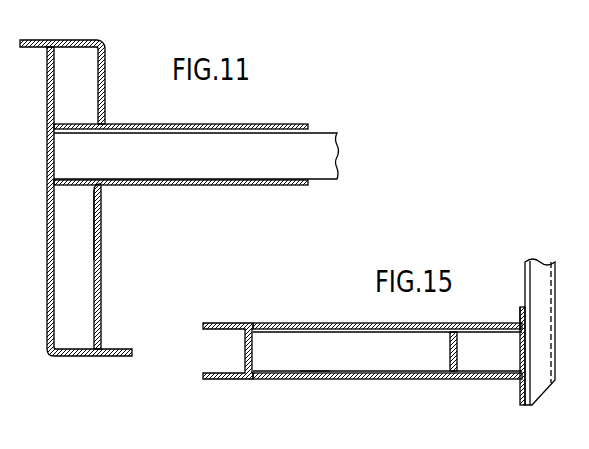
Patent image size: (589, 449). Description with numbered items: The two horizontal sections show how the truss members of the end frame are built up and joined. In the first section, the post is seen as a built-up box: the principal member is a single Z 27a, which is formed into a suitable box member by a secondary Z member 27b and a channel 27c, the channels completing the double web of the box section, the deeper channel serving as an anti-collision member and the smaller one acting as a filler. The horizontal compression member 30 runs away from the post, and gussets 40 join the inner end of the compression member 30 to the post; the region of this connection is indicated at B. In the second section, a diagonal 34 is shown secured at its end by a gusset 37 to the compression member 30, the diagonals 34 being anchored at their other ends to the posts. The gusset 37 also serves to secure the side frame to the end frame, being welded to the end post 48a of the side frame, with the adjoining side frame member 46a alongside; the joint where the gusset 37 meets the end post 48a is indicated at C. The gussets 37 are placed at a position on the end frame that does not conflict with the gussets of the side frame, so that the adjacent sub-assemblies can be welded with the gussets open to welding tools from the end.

In FIG. 11, the single Z 27a is at (47, 246).
In FIG. 11, the secondary Z member 27b is at (106, 60).
In FIG. 11, the channel 27c is at (103, 268).
In FIG. 11, the horizontal compression member 30 is at (322, 155).
In FIG. 11, the gussets 40 is at (228, 125).
In FIG. 11, the bond region B is at (103, 232).
In FIG. 15, the bond region B is at (311, 384).
In FIG. 15, the diagonals 34 is at (212, 380).
In FIG. 15, the gussets 37 is at (313, 323).
In FIG. 15, the post 46a is at (556, 332).
In FIG. 15, the end post 48a is at (518, 383).
In FIG. 15, the joint region C is at (519, 306).